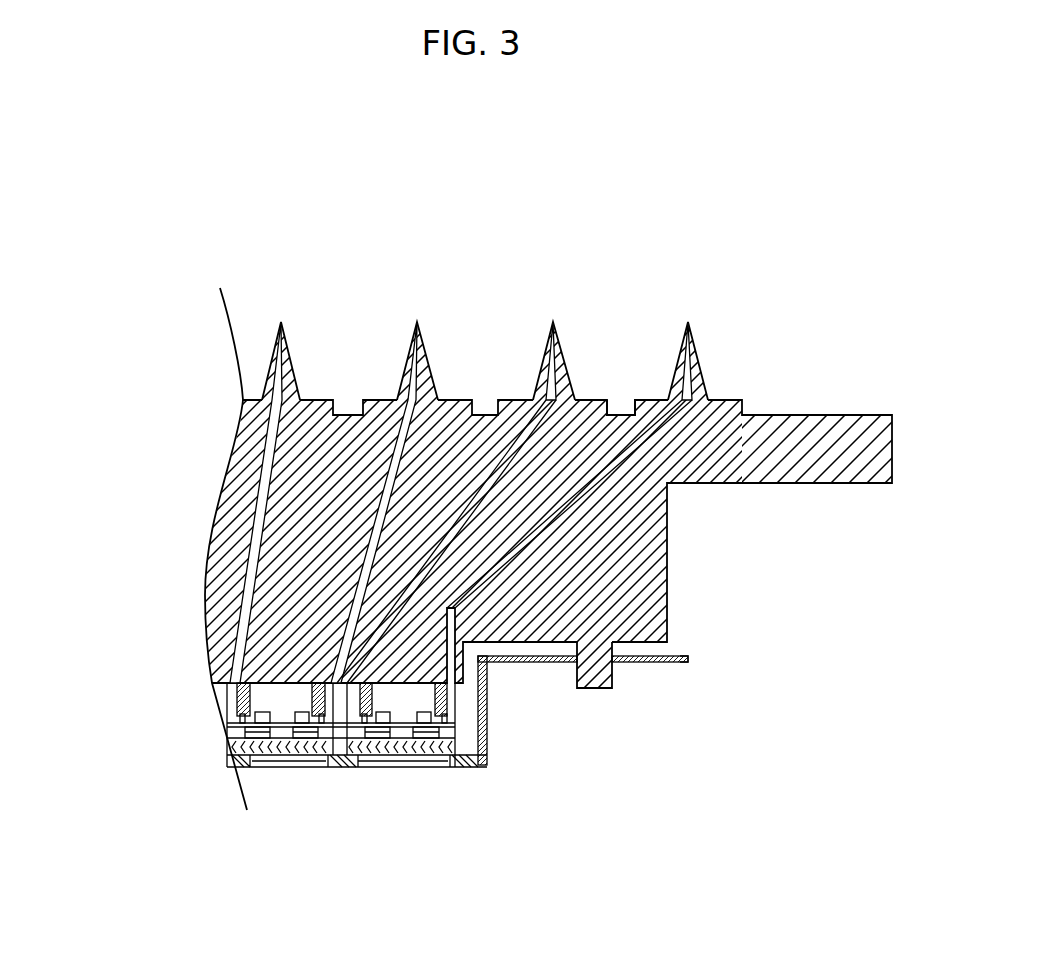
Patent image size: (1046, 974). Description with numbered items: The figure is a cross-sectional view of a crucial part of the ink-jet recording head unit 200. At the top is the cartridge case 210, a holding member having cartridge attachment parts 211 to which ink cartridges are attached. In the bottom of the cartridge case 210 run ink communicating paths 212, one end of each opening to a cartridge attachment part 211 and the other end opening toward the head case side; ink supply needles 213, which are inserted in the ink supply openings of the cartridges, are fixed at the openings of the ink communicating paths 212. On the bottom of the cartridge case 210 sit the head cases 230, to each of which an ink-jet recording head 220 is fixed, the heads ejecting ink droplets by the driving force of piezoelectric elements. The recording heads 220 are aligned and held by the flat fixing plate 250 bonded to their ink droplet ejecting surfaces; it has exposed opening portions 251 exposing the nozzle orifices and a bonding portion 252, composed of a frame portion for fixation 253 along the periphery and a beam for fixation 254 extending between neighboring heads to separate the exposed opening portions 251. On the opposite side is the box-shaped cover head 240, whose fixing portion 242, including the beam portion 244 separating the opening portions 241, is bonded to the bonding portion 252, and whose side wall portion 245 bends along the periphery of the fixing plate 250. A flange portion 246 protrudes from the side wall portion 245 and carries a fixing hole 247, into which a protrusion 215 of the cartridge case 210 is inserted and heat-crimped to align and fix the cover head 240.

The ink-jet recording head unit 200 is at (757, 256).
The cartridge case 210 is at (832, 415).
The cartridge attachment part 211 is at (648, 400).
The ink communicating path 212 is at (418, 417).
The ink supply needle 213 is at (413, 337).
The protrusion 215 is at (612, 684).
The ink-jet recording head 220 is at (210, 737).
The head case 230 is at (228, 700).
The cover head 240 is at (501, 783).
The opening portion 241 is at (318, 767).
The fixing portion 242 is at (341, 732).
The beam portion 244 is at (338, 768).
The side wall portion 245 is at (486, 720).
The flange portion 246 is at (688, 656).
The fixing hole 247 is at (618, 663).
The fixing plate 250 is at (226, 757).
The exposed opening portion 251 is at (228, 755).
The bonding portion 252 is at (520, 912).
The frame portion for fixation 253 is at (463, 767).
The beam for fixation 254 is at (365, 767).